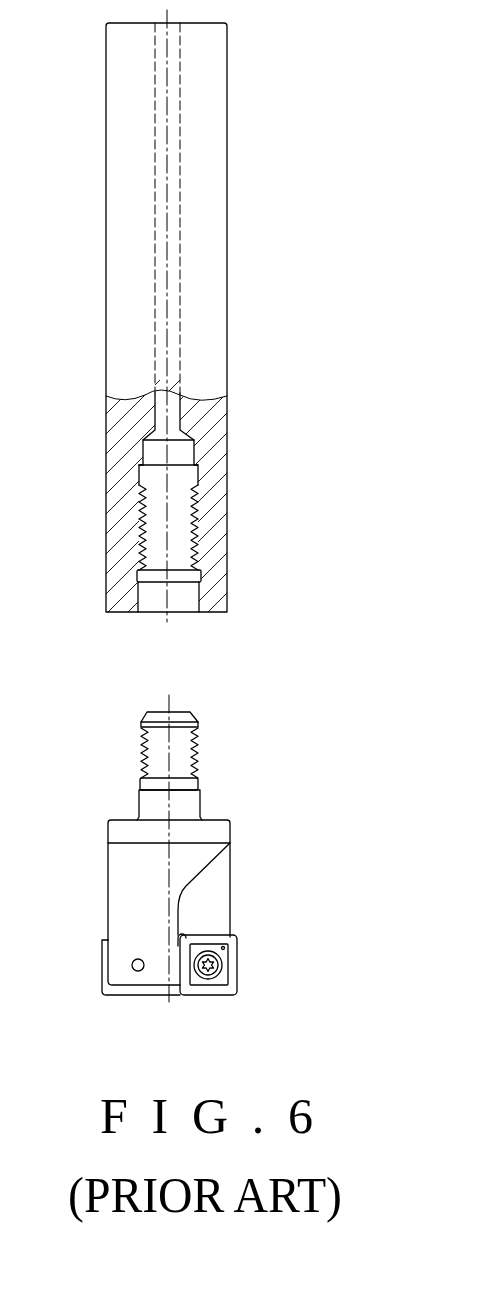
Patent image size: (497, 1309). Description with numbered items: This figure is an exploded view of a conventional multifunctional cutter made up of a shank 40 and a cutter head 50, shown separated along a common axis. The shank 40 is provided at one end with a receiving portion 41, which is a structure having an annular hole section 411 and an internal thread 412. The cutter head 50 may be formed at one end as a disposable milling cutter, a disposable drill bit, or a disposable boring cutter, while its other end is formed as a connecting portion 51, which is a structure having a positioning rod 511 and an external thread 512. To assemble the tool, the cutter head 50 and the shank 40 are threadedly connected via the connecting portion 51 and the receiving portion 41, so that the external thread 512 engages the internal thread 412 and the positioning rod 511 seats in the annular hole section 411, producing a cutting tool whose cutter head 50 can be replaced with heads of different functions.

The shank 40 is at (216, 294).
The receiving portion 41 is at (280, 502).
The annular hole section 411 is at (185, 597).
The internal thread 412 is at (197, 523).
The cutter head 50 is at (120, 883).
The connecting portion 51 is at (293, 775).
The positioning rod 511 is at (188, 799).
The external thread 512 is at (195, 752).